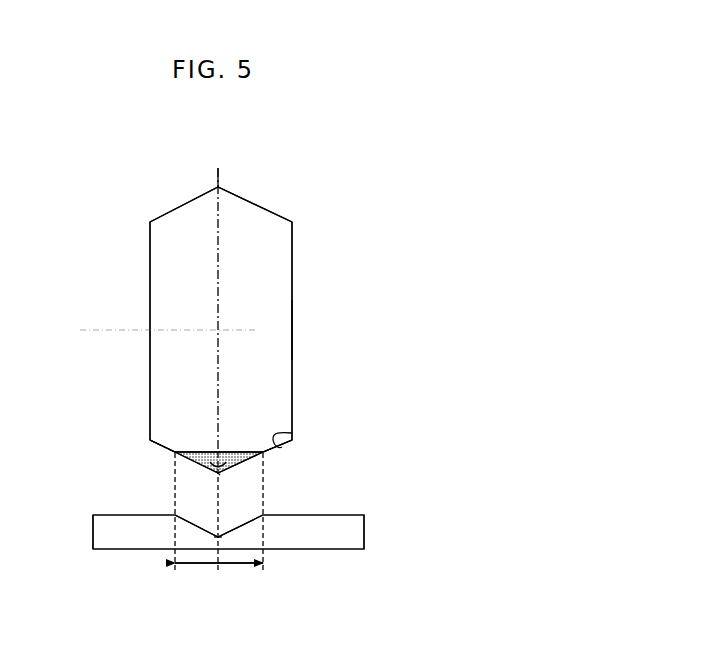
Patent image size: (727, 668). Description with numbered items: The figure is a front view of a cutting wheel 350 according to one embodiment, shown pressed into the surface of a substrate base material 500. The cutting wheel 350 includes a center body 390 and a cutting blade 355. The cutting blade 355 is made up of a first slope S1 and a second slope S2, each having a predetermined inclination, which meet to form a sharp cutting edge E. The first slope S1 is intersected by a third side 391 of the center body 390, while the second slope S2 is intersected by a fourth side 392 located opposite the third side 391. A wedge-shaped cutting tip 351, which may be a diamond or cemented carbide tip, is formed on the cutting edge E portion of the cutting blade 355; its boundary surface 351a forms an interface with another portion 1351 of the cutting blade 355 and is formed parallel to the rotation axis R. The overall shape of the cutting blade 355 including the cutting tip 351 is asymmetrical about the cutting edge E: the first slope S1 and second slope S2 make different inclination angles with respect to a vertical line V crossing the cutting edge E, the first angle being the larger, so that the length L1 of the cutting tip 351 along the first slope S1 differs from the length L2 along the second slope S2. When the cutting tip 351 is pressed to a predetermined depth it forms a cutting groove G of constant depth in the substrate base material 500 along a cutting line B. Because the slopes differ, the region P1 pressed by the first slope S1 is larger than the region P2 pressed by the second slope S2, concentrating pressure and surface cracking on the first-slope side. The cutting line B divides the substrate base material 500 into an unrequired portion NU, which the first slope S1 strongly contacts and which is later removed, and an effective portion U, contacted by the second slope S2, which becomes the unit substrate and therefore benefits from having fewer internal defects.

The cutting wheel 350 is at (253, 210).
The center body 390 is at (268, 272).
The third side 391 is at (150, 303).
The fourth side 392 is at (292, 318).
The another portion of the cutting blade 1351 is at (254, 444).
The cutting blade 355 is at (292, 433).
The boundary surface 351a is at (184, 452).
The cutting tip 351 is at (190, 455).
The substrate base material 500 is at (378, 519).
The vertical line V is at (217, 170).
The rotation axis R is at (324, 330).
The first slope S1 is at (160, 445).
The second slope S2 is at (284, 444).
The length of the cutting tip constituting the first slope L1 is at (200, 463).
The length of the cutting tip constituting the second slope L2 is at (240, 464).
The cutting edge E is at (221, 474).
The cutting groove G is at (240, 528).
The cutting line B is at (220, 540).
The effective portion U is at (363, 537).
The unrequired portion NU is at (97, 537).
The region pressed by the first slope P1 is at (196, 577).
The region pressed by the second slope P2 is at (240, 577).